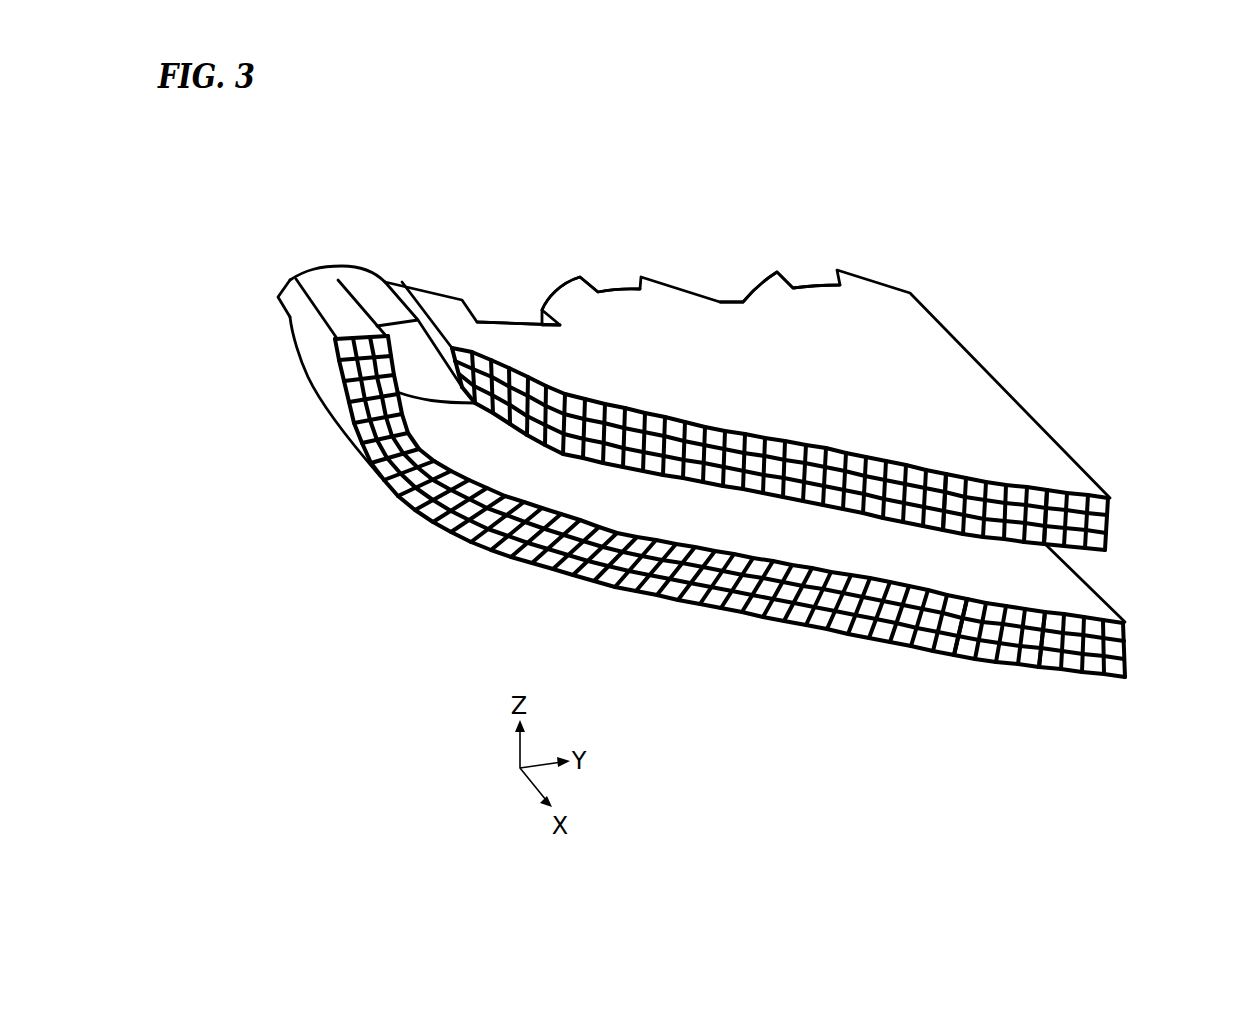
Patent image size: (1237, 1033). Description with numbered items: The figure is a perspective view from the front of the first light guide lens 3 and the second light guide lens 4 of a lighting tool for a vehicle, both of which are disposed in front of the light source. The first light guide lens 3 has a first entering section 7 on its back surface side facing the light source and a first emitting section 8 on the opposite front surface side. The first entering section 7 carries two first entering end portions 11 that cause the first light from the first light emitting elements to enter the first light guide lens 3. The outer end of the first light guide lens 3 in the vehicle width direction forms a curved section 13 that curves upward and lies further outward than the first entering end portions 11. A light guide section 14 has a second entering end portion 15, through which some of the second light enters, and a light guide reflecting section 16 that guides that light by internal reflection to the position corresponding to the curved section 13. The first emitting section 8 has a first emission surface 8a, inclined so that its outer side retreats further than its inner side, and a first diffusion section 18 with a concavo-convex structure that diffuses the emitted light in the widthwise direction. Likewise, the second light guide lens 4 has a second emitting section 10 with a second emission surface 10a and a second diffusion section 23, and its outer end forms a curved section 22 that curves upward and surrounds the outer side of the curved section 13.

The first light guide lens 3 is at (1065, 452).
The second light guide lens 4 is at (1105, 597).
The first entering section 7 is at (508, 322).
The first emitting section 8 is at (780, 449).
The first emission surface 8a is at (752, 455).
The second emitting section 10 is at (730, 506).
The second emission surface 10a is at (772, 597).
The first entering end portion 11 is at (614, 289).
The curved section 13 is at (443, 391).
The light guide section 14 is at (388, 166).
The second entering end portion 15 is at (333, 268).
The light guide reflecting section 16 is at (390, 338).
The first diffusion section 18 is at (980, 500).
The curved section 22 is at (350, 460).
The second diffusion section 23 is at (1005, 632).